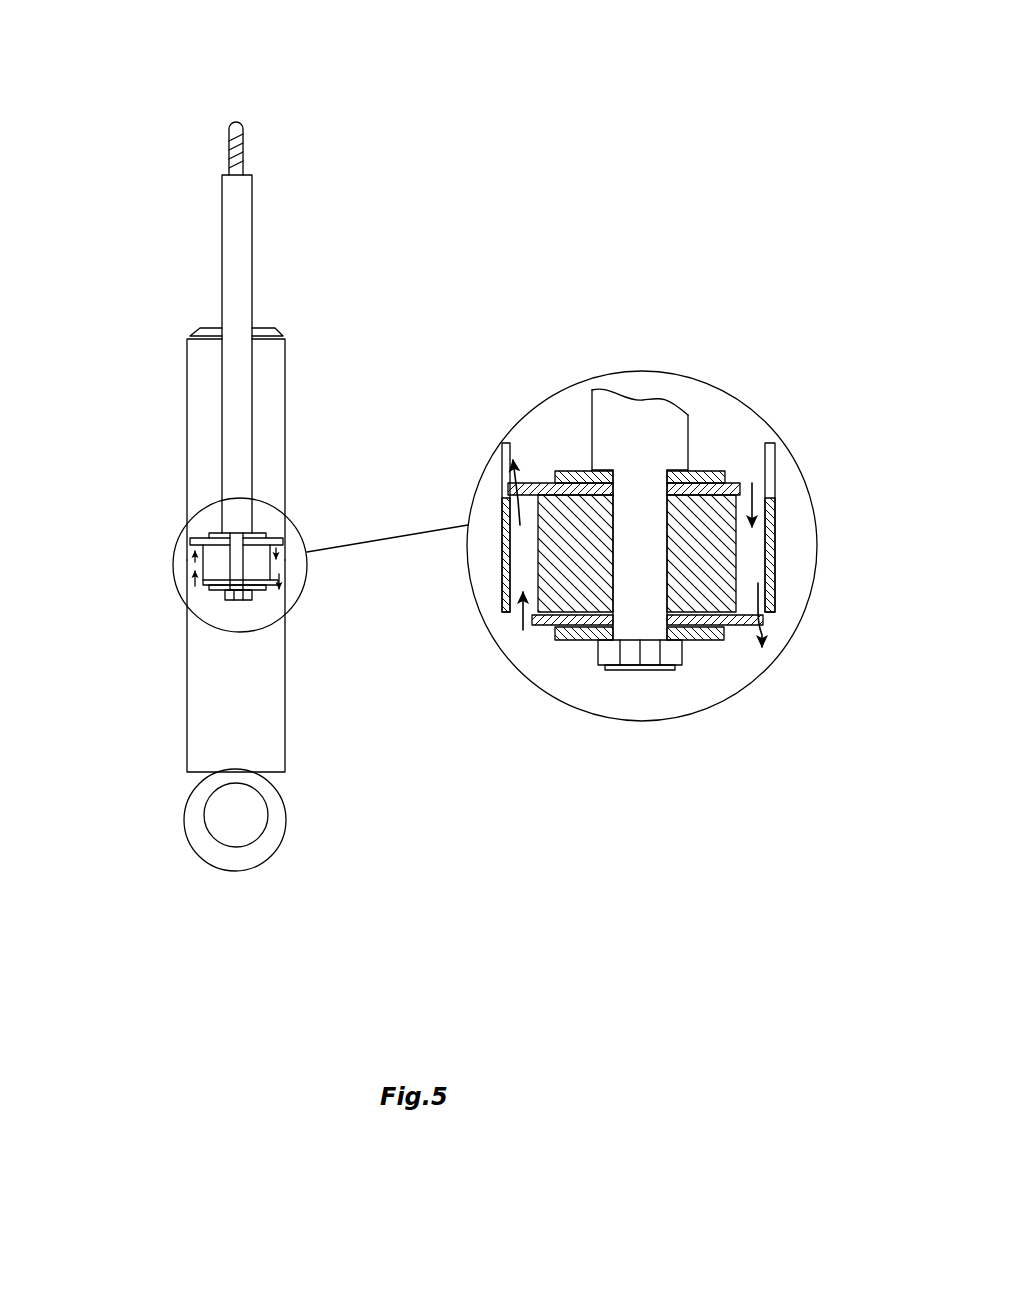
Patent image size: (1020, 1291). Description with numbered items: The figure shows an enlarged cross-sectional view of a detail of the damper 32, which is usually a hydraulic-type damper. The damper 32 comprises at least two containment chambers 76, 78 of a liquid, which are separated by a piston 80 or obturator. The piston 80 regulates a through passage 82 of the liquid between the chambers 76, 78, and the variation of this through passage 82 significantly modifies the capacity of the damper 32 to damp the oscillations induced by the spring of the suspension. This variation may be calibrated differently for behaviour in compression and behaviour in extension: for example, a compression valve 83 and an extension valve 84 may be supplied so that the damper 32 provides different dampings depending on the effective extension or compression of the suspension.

The damper 32 is at (325, 210).
The containment chamber 76 is at (206, 426).
The containment chamber 78 is at (235, 695).
The piston 80 is at (215, 561).
The through passage 82 is at (752, 483).
The compression valve 83 is at (570, 484).
The extension valve 84 is at (710, 627).